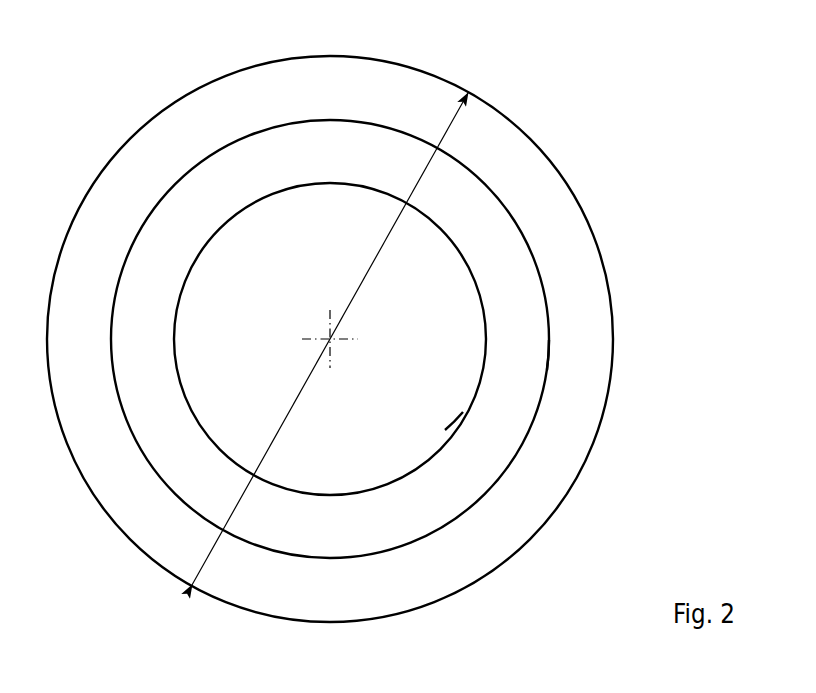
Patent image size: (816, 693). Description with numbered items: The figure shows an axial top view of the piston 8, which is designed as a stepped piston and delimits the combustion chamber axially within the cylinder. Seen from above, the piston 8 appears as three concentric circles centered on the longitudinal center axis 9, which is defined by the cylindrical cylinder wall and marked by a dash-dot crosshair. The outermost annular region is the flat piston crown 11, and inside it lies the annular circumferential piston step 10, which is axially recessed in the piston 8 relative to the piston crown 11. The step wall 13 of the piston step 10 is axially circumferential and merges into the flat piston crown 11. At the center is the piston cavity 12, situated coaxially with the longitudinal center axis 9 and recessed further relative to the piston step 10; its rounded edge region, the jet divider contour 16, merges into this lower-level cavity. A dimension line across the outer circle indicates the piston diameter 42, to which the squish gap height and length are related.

The piston 8 is at (398, 339).
The longitudinal center axis 9 is at (334, 343).
The piston step 10 is at (508, 250).
The piston crown 11 is at (537, 182).
The piston cavity 12 is at (457, 310).
The step wall 13 is at (548, 338).
The jet divider contour 16 is at (463, 412).
The piston diameter 42 is at (364, 276).